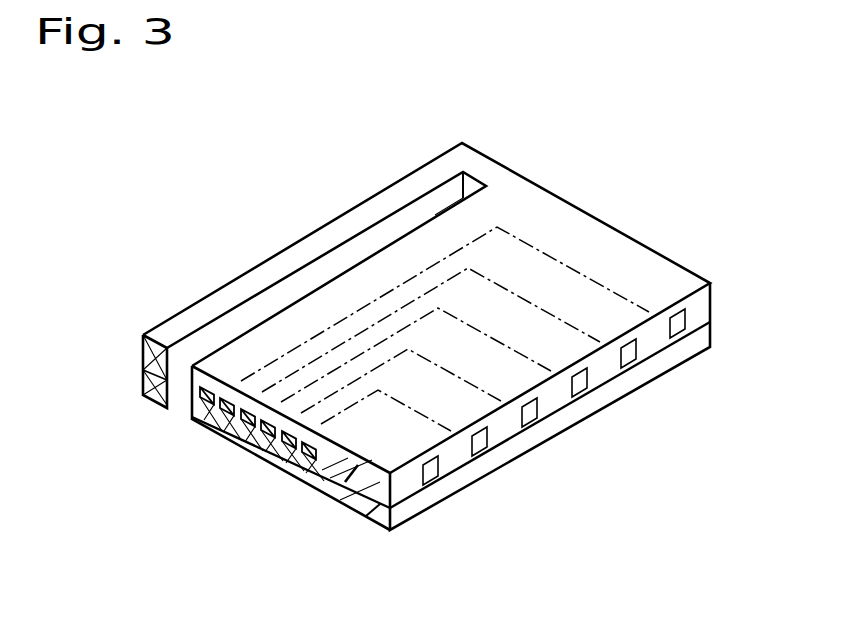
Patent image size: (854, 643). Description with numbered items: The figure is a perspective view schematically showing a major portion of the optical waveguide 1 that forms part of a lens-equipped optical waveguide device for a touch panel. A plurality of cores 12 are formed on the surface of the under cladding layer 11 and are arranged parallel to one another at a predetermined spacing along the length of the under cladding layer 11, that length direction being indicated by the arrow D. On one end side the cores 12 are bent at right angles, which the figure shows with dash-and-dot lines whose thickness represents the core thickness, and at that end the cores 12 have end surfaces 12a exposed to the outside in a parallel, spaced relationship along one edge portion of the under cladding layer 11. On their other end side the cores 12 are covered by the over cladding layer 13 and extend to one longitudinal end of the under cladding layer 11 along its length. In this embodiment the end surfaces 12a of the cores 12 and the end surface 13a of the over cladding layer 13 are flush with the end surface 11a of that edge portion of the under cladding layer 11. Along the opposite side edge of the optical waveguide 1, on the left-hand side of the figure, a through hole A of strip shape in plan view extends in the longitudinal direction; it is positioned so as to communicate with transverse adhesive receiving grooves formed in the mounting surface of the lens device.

The optical waveguide 1 is at (283, 211).
The under cladding layer 11 is at (213, 427).
The end surface of the under cladding layer 11a is at (517, 448).
The cores 12 is at (500, 283).
The end surfaces of the cores 12a is at (627, 358).
The over cladding layer 13 is at (335, 463).
The end surface of the over cladding layer 13a is at (650, 343).
The through hole A is at (403, 220).
The arrow indicating lengthwise direction D is at (210, 210).